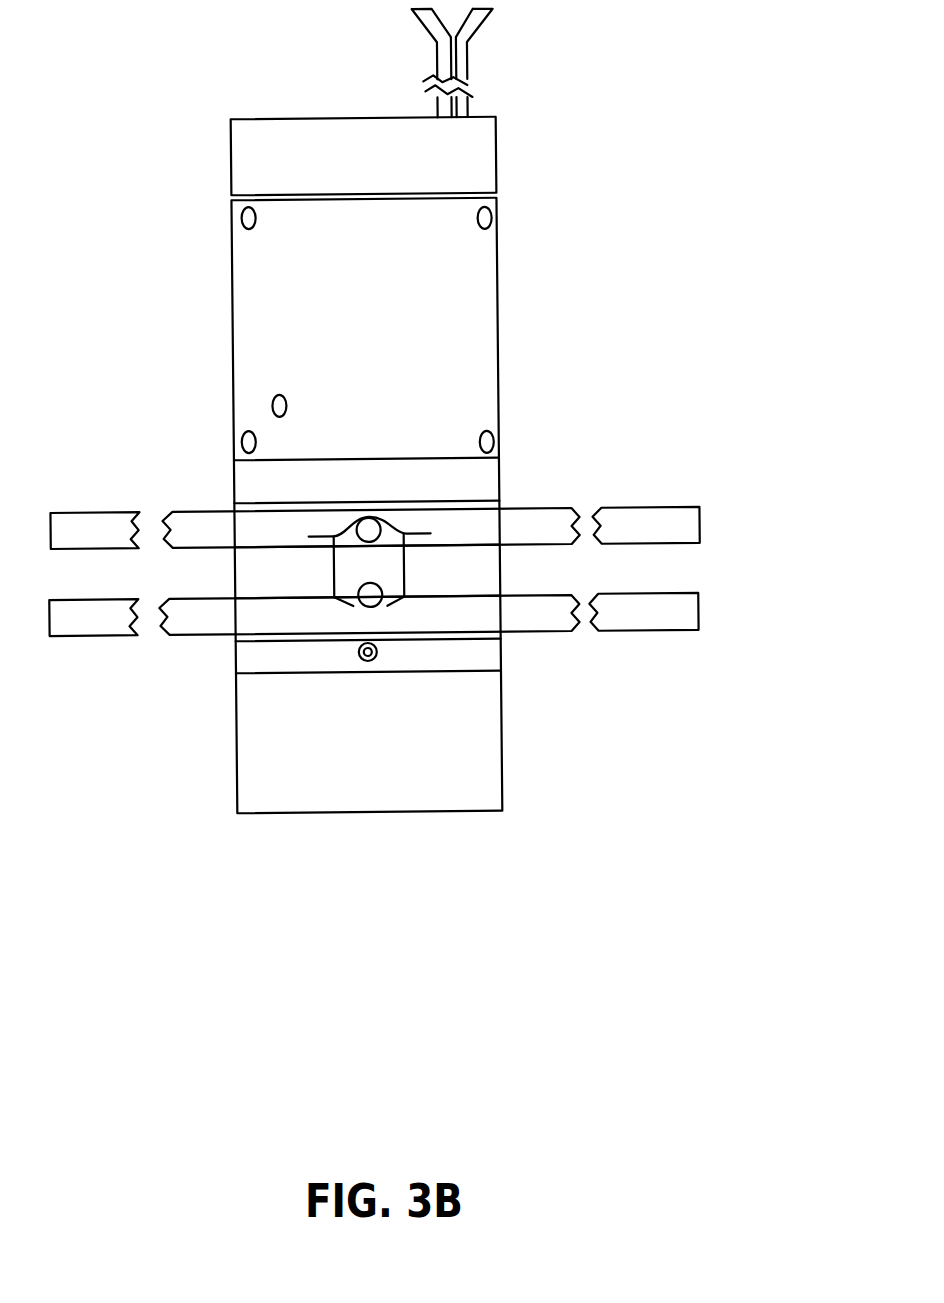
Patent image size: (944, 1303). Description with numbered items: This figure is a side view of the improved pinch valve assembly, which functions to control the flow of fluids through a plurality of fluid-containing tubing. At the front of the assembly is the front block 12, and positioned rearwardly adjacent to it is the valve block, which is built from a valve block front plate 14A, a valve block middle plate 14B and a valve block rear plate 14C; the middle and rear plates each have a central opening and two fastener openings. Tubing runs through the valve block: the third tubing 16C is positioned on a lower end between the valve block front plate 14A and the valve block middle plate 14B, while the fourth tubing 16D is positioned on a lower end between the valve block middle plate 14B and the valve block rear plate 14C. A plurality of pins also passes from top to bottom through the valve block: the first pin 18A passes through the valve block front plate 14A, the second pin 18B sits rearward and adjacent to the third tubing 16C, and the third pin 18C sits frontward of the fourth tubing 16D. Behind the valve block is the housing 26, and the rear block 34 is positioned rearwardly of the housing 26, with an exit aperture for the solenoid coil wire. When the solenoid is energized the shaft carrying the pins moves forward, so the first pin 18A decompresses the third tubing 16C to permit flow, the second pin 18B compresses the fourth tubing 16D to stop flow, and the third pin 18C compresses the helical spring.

The front block 12 is at (475, 791).
The valve block front plate 14A is at (486, 656).
The valve block middle plate 14B is at (481, 570).
The valve block rear plate 14C is at (490, 506).
The third tubing 16C is at (679, 620).
The fourth tubing 16D is at (679, 523).
The first pin 18A is at (360, 660).
The second pin 18B is at (365, 597).
The third pin 18C is at (368, 530).
The housing 26 is at (479, 310).
The rear block 34 is at (475, 151).